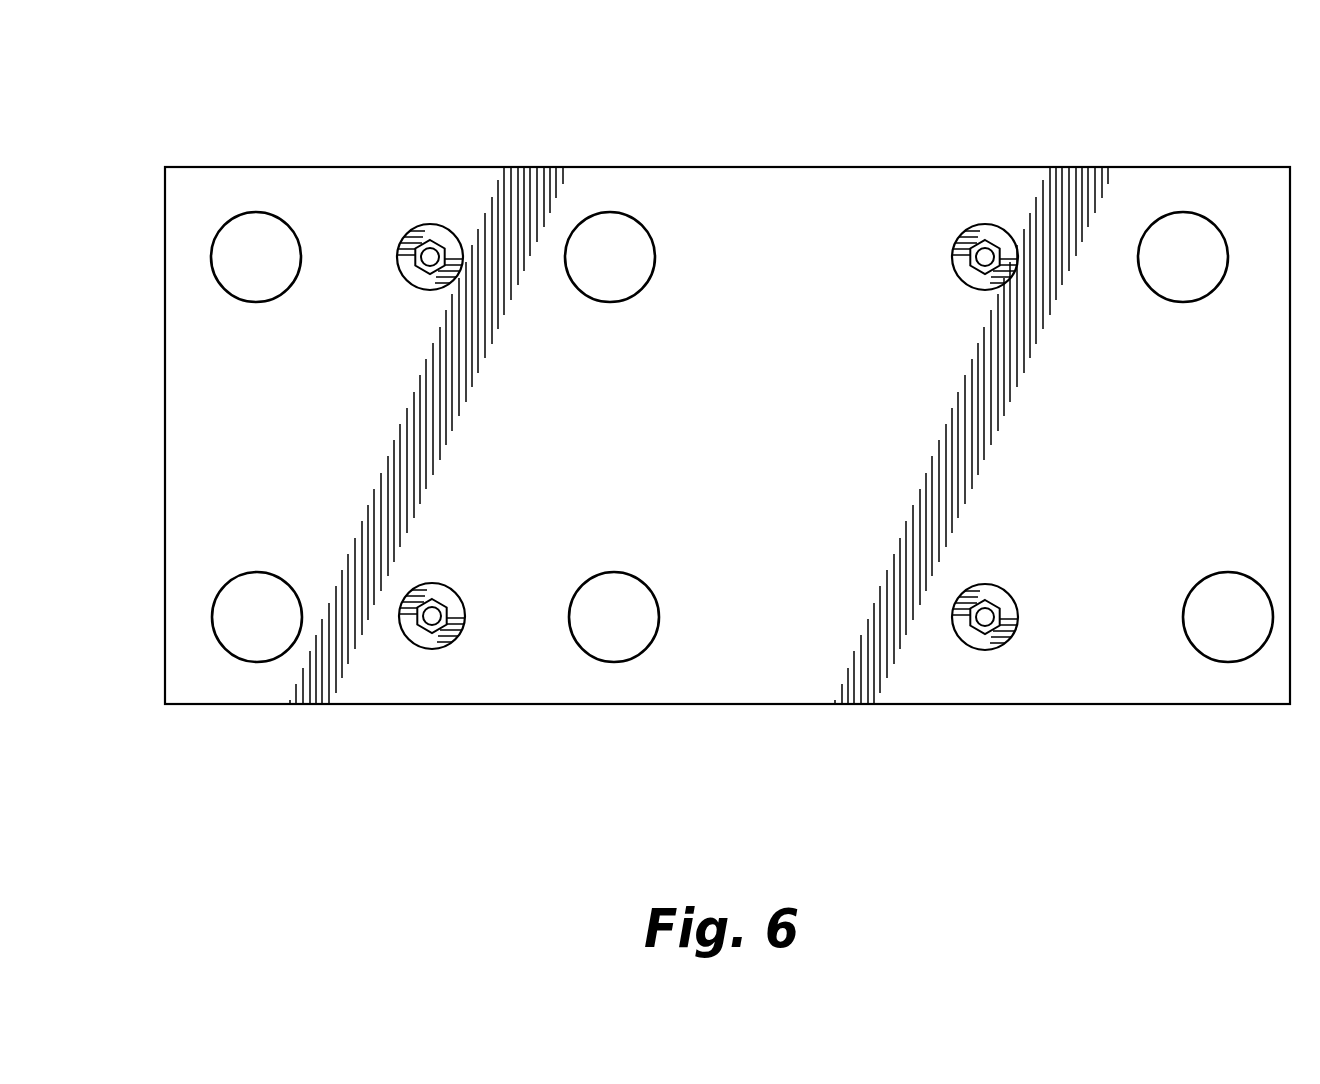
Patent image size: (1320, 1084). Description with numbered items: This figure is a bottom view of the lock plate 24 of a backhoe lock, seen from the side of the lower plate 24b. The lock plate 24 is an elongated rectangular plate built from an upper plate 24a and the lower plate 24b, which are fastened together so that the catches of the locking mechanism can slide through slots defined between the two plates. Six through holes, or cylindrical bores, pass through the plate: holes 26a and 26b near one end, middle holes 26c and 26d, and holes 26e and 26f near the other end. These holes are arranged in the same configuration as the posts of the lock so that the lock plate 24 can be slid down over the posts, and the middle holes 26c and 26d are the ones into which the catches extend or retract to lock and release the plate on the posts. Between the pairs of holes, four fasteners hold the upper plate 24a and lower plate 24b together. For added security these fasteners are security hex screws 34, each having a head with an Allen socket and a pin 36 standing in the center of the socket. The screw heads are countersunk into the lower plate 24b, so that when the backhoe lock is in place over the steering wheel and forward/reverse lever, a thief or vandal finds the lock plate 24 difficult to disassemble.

The lock plate 24 is at (982, 828).
The upper plate 24a is at (892, 683).
The lower plate 24b is at (795, 478).
The through hole 26a is at (253, 662).
The through hole 26b is at (253, 212).
The through hole 26c is at (608, 212).
The through hole 26d is at (612, 662).
The through hole 26e is at (1178, 212).
The through hole 26f is at (1233, 662).
The security hex screw 34 is at (398, 271).
The pin 36 is at (424, 254).